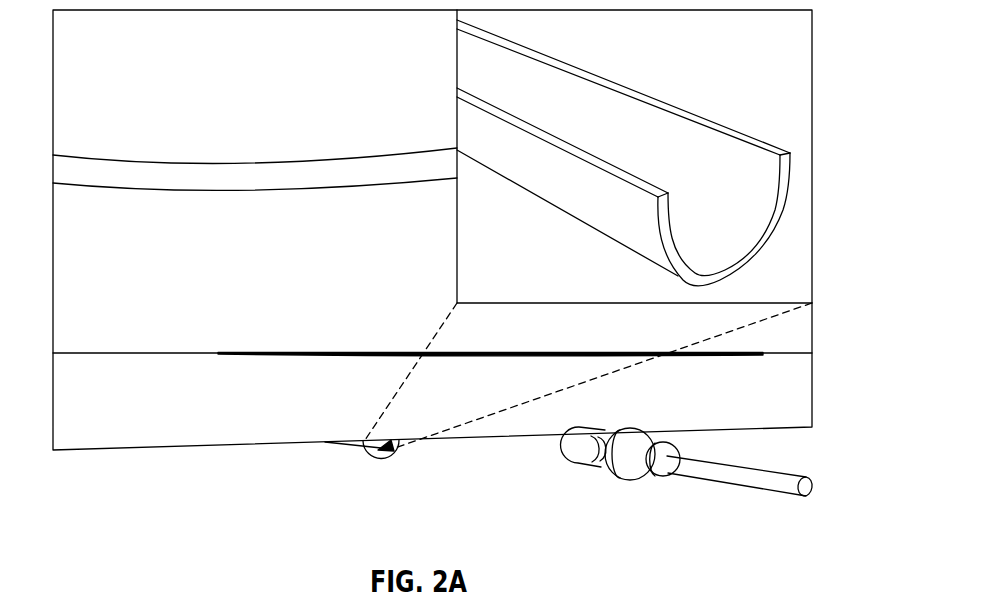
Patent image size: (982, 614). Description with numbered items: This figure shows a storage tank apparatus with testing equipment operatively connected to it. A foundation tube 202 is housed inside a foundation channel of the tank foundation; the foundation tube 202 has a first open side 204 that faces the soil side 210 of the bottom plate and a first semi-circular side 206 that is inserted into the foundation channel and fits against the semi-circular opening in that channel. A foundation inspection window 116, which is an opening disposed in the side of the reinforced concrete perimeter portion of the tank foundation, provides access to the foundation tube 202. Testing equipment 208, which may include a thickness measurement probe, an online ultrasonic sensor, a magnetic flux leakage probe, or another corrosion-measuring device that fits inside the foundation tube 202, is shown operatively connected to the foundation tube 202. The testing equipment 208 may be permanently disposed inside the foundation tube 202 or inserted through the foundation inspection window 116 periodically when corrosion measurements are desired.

The foundation inspection window 116 is at (396, 456).
The foundation tube 202 is at (357, 450).
The first open side 204 is at (470, 66).
The first semi-circular side 206 is at (662, 226).
The testing equipment 208 is at (803, 506).
The soil side 210 is at (191, 448).